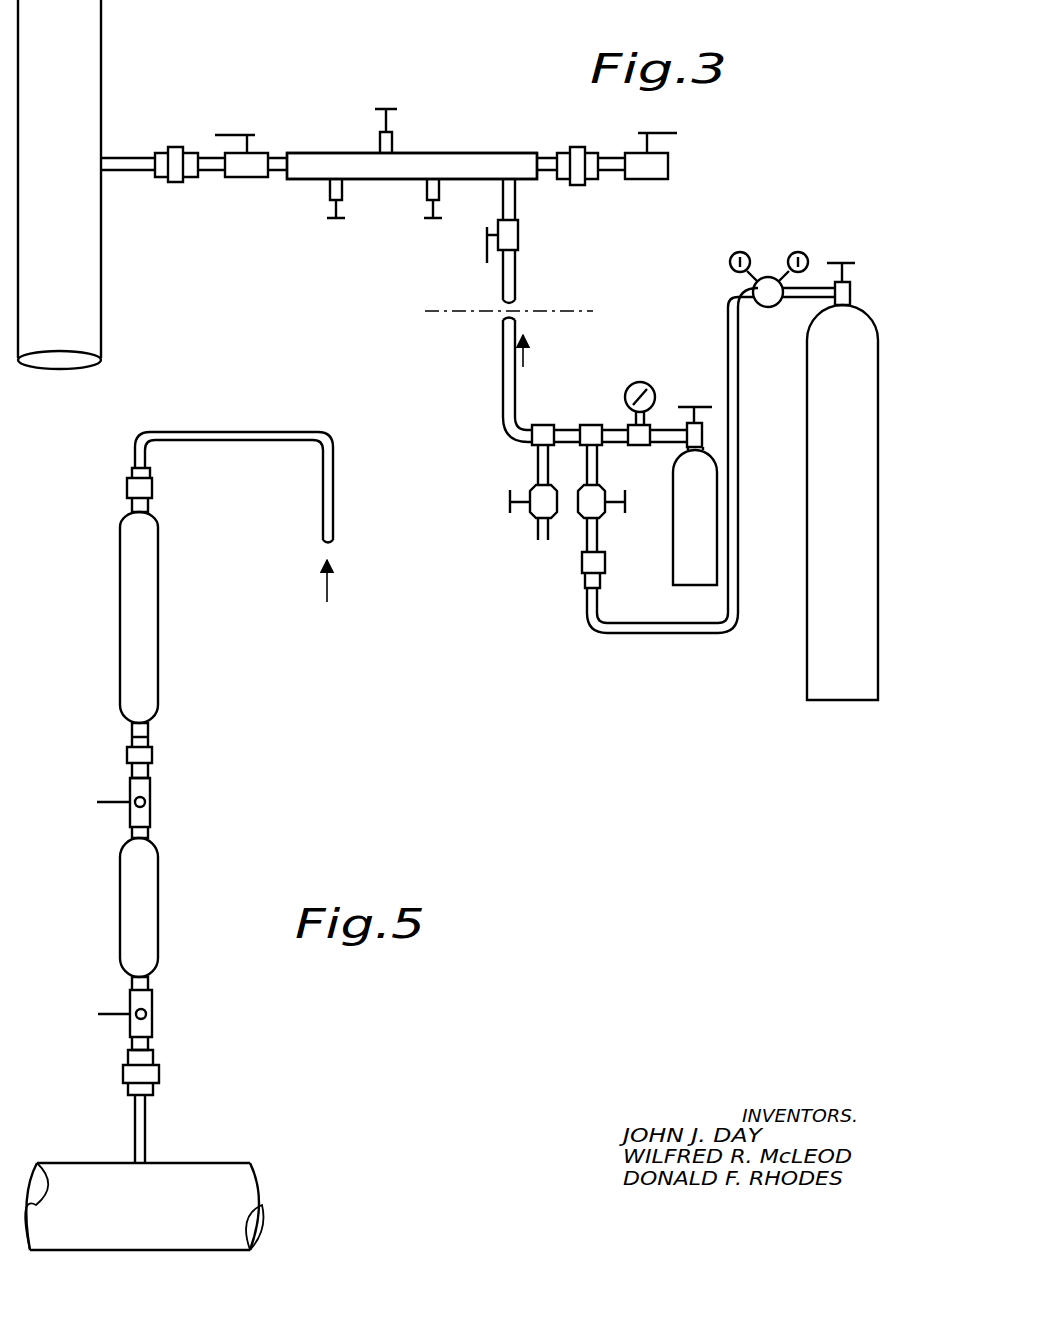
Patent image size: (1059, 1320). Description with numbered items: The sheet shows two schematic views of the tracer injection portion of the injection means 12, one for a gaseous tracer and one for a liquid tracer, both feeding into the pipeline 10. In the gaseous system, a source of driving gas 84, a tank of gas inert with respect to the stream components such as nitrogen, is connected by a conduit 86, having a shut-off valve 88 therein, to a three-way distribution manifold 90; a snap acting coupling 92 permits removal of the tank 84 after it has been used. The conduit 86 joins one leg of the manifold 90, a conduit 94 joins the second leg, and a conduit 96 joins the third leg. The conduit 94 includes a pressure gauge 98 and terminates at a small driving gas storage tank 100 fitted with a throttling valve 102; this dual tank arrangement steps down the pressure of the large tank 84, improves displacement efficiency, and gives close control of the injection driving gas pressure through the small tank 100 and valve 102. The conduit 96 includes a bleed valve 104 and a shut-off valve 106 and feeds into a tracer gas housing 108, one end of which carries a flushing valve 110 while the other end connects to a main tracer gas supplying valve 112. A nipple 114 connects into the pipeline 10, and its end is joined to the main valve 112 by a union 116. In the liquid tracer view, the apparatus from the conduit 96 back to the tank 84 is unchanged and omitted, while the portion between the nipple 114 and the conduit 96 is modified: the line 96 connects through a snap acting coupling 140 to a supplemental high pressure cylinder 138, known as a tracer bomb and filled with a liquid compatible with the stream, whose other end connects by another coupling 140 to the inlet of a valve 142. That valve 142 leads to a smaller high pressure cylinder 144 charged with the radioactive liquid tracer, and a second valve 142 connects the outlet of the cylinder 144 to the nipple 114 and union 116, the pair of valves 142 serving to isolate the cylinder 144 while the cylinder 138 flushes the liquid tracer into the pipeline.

In FIG. 3, the pipeline 10 is at (104, 37).
In FIG. 5, the pipeline 10 is at (222, 1160).
In FIG. 3, the injection means 12 is at (445, 99).
In FIG. 3, the source of driving gas 84 is at (805, 652).
In FIG. 3, the conduit 86 is at (588, 618).
In FIG. 3, the shut-off valve 88 is at (598, 508).
In FIG. 3, the distribution manifold 90 is at (591, 425).
In FIG. 3, the snap acting coupling 92 is at (582, 562).
In FIG. 3, the conduit 94 is at (612, 443).
In FIG. 3, the conduit 96 is at (508, 322).
In FIG. 5, the conduit 96 is at (323, 500).
In FIG. 3, the pressure gauge 98 is at (641, 382).
In FIG. 3, the small driving gas storage tank 100 is at (675, 562).
In FIG. 3, the throttling valve 102 is at (712, 392).
In FIG. 3, the bleed valve 104 is at (533, 492).
In FIG. 3, the shut-off valve 106 is at (518, 236).
In FIG. 3, the tracer gas housing 108 is at (400, 183).
In FIG. 3, the flushing valve 110 is at (640, 179).
In FIG. 3, the main tracer gas supplying valve 112 is at (247, 176).
In FIG. 3, the nipple 114 is at (118, 167).
In FIG. 5, the nipple 114 is at (136, 1115).
In FIG. 3, the union 116 is at (175, 181).
In FIG. 5, the union 116 is at (160, 1075).
In FIG. 5, the supplemental high pressure cylinder 138 is at (158, 625).
In FIG. 5, the snap acting coupling 140 is at (152, 488).
In FIG. 5, the valve 142 is at (150, 792).
In FIG. 5, the smaller high pressure cylinder 144 is at (158, 877).